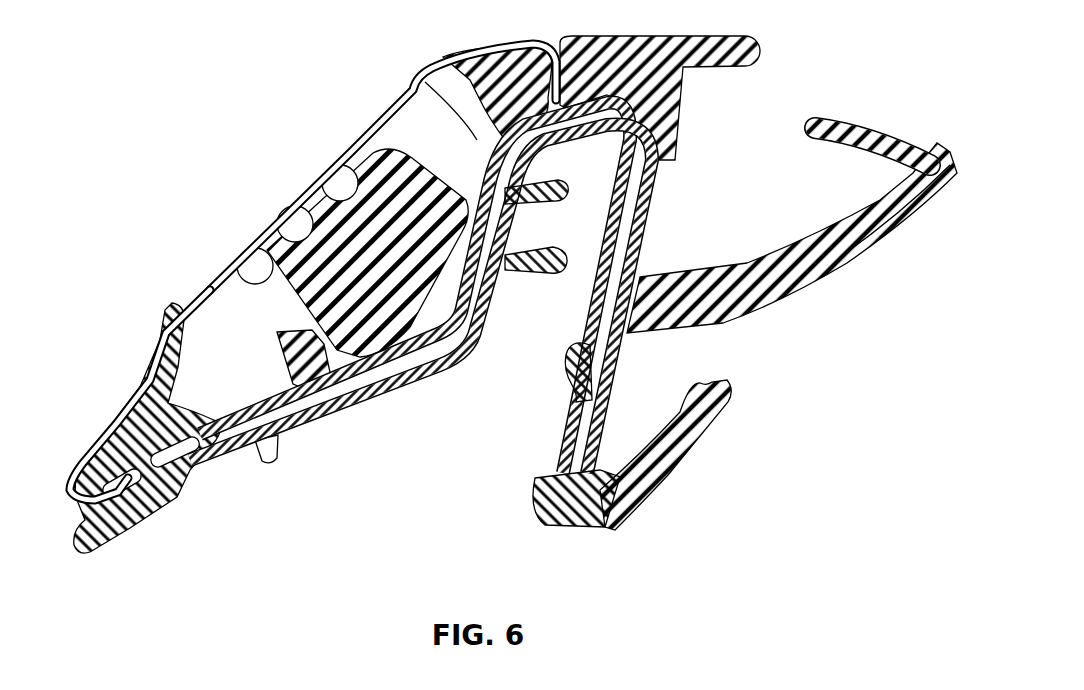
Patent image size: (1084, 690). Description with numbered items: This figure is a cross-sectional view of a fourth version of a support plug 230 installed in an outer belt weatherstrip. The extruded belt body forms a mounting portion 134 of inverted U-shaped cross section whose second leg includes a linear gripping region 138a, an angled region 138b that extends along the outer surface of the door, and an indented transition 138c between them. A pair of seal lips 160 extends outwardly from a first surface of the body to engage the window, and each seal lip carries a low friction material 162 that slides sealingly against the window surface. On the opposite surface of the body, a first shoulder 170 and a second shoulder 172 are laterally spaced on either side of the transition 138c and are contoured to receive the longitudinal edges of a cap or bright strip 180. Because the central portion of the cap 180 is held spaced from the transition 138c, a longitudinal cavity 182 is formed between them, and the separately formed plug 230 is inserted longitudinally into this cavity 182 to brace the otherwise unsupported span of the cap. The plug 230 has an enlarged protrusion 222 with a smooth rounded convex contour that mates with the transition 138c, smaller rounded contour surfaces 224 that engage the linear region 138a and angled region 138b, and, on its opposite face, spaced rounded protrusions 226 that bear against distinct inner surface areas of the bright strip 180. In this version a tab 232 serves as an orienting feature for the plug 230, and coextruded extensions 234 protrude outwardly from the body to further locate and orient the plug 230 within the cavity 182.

The mounting portion 134 is at (655, 224).
The linear gripping region 138a is at (513, 236).
The angled region 138b is at (283, 440).
The transition 138c is at (482, 334).
The seal lips 160 is at (793, 262).
The low friction material 162 is at (860, 263).
The first shoulder 170 is at (500, 62).
The second shoulder 172 is at (127, 413).
The cap or bright strip 180 is at (140, 377).
The cavity 182 is at (250, 378).
The enlarged protrusion 222 is at (455, 345).
The rounded contour surfaces 224 is at (500, 278).
The rounded protrusions 226 is at (322, 170).
The plug 230 is at (285, 272).
The tab 232 is at (410, 160).
The coextruded extensions 234 is at (416, 74).